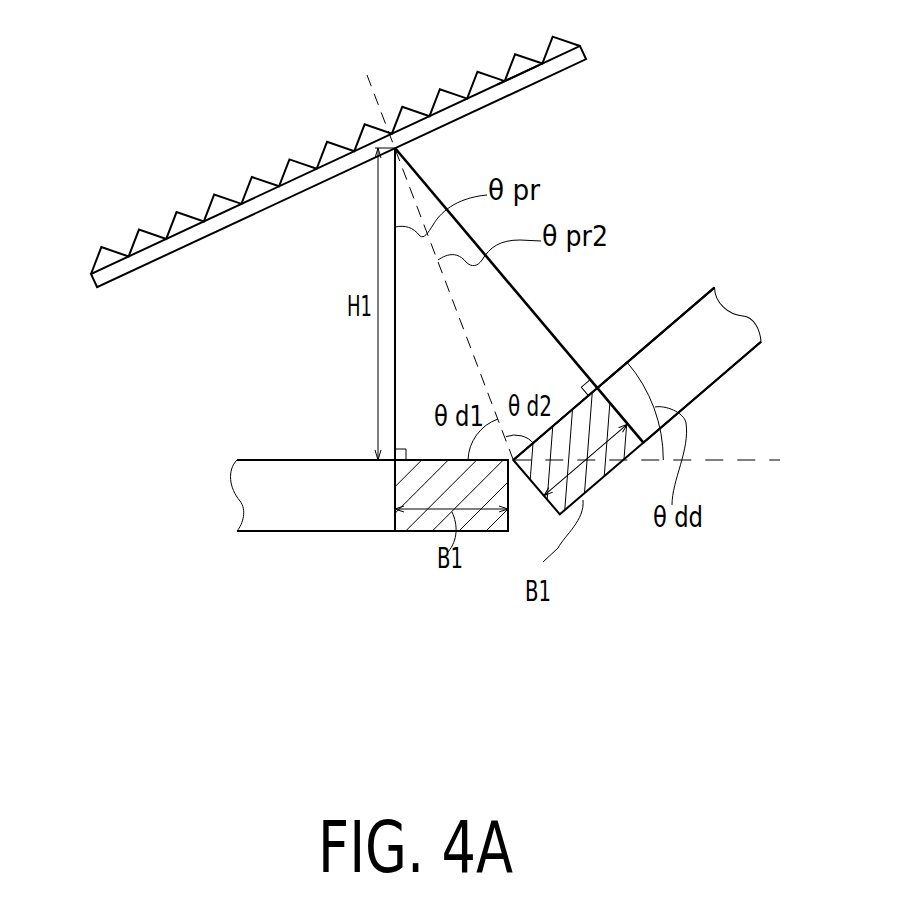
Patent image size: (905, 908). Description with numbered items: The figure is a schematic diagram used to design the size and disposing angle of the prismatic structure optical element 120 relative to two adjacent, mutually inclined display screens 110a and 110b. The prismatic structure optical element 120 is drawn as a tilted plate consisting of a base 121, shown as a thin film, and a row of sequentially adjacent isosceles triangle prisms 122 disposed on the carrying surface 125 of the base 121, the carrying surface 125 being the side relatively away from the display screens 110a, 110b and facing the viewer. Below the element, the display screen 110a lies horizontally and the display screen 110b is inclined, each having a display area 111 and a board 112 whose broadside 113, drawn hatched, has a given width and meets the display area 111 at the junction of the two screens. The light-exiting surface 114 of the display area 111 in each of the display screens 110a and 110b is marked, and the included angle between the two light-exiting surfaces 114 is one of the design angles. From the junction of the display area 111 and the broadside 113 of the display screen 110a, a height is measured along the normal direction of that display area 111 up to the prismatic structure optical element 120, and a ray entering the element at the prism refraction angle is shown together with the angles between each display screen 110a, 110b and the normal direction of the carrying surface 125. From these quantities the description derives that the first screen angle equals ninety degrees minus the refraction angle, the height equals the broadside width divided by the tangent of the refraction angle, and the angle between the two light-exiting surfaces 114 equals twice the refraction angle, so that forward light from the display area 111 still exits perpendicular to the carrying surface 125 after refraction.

The prismatic structure optical element 120 is at (429, 157).
The base 121 is at (567, 68).
The prism 122 is at (567, 42).
The carrying surface 125 is at (518, 75).
The display screen 110a is at (420, 627).
The display screen 110b is at (750, 627).
The display area 111 is at (308, 518).
The board 112 is at (425, 525).
The broadside 113 is at (495, 499).
The light-exiting surface 114 is at (281, 450).